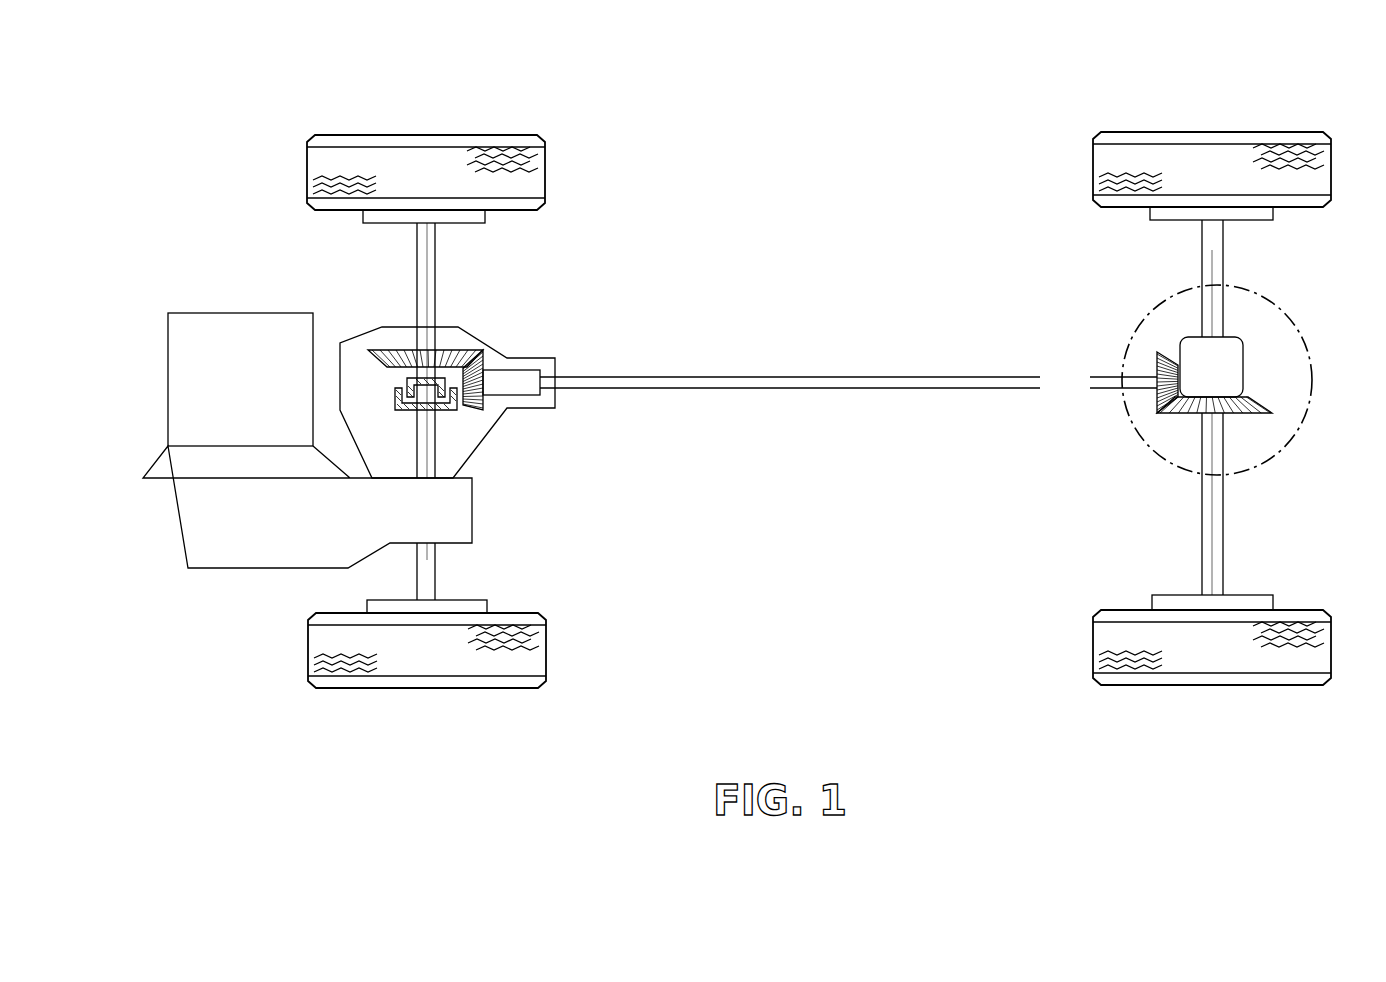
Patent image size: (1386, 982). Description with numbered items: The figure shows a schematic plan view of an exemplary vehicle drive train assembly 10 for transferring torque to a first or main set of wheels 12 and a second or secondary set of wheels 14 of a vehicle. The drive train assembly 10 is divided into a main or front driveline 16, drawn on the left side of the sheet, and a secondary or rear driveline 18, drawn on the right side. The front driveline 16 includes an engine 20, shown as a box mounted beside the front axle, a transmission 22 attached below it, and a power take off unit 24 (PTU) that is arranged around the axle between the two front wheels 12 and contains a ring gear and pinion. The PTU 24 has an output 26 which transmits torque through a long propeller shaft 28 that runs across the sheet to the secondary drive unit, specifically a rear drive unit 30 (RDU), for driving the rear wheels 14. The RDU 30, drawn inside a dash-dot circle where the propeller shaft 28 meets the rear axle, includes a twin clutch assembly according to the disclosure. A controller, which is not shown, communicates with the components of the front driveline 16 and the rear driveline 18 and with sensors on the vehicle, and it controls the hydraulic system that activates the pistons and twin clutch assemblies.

The vehicle drive train assembly 10 is at (246, 77).
The first or main set of wheels 12 is at (418, 152).
The second or secondary set of wheels 14 is at (1204, 138).
The front driveline 16 is at (288, 463).
The rear driveline 18 is at (1243, 391).
The engine 20 is at (168, 350).
The transmission 22 is at (162, 522).
The power take off unit 24 is at (515, 330).
The output 26 is at (578, 358).
The propeller shaft 28 is at (765, 377).
The rear drive unit 30 is at (1290, 309).